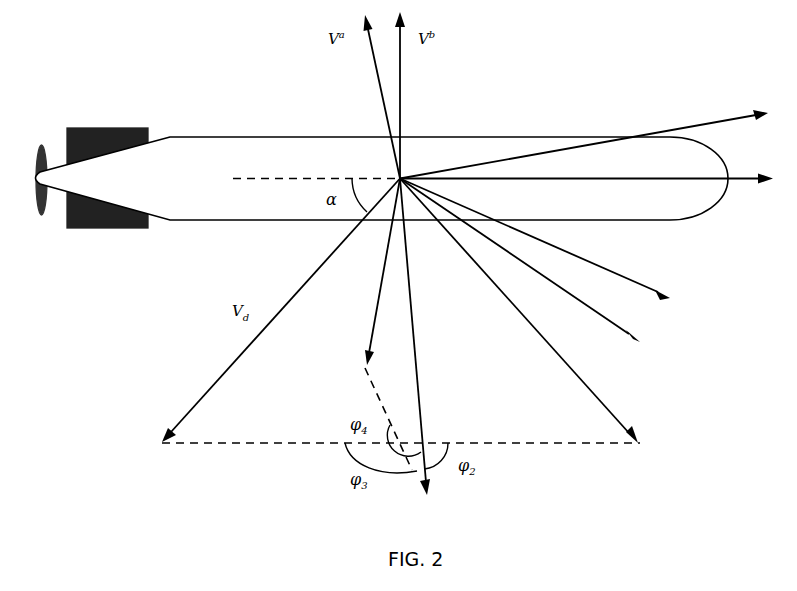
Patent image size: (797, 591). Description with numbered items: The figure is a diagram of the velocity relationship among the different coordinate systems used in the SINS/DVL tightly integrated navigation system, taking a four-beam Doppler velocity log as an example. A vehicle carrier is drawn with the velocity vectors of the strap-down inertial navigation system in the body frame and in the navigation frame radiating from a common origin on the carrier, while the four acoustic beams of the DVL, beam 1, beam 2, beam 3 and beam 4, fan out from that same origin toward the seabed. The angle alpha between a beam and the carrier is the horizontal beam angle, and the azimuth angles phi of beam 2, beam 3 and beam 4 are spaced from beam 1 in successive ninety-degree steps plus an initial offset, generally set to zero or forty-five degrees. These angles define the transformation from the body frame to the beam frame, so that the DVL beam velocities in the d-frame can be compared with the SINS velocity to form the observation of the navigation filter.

The first beam of the DVL 1 is at (558, 316).
The second beam of the DVL 2 is at (452, 341).
The third beam of the DVL 3 is at (246, 316).
The fourth beam of the DVL 4 is at (343, 280).